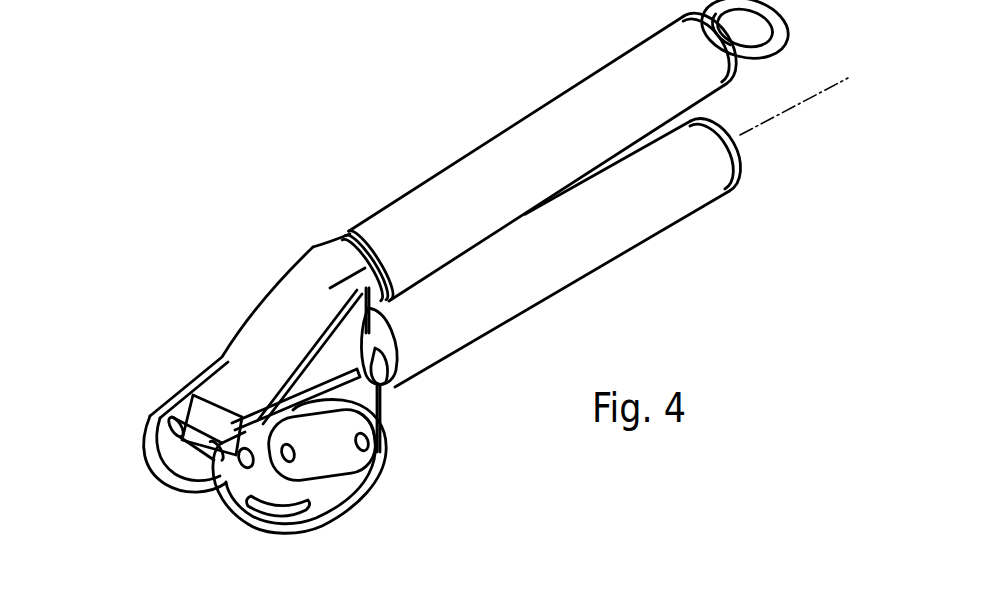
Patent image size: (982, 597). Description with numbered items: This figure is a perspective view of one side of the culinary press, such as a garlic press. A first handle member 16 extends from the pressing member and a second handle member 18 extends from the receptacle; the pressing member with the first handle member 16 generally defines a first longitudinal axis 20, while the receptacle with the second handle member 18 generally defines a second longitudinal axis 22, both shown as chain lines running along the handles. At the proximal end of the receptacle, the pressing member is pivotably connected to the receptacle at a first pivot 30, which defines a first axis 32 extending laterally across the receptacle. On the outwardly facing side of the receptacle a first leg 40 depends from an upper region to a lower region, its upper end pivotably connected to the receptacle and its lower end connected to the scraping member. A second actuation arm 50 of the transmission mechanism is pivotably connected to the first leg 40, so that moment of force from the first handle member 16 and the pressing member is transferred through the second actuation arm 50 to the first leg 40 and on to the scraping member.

The first handle member 16 is at (558, 127).
The second handle member 18 is at (605, 242).
The first longitudinal axis 20 is at (787, 0).
The second longitudinal axis 22 is at (180, 450).
The first pivot 30 is at (242, 466).
The first axis 32 is at (243, 462).
The first leg 40 is at (303, 415).
The second actuation arm 50 is at (323, 452).